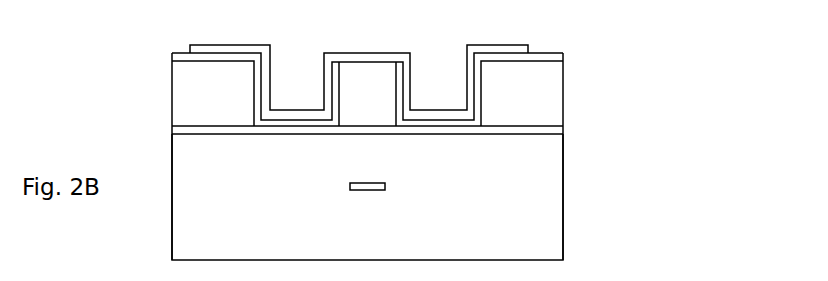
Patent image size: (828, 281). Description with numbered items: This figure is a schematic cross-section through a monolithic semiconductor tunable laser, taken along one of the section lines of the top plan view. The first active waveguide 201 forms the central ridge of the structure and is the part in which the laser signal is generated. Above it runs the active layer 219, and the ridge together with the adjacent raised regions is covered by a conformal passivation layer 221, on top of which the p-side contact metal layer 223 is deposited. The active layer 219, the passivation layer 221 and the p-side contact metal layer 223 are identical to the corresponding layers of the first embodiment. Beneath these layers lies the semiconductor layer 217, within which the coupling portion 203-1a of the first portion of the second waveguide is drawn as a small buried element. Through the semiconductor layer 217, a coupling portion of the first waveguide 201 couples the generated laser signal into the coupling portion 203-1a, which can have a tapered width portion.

The first active waveguide 201 is at (386, 107).
The semiconductor layer 217 is at (275, 197).
The active layer 219 is at (563, 128).
The passivation layer 221 is at (563, 56).
The p-side contact metal layer 223 is at (190, 46).
The coupling portion of the first portion of the second waveguide 203-1a is at (385, 186).